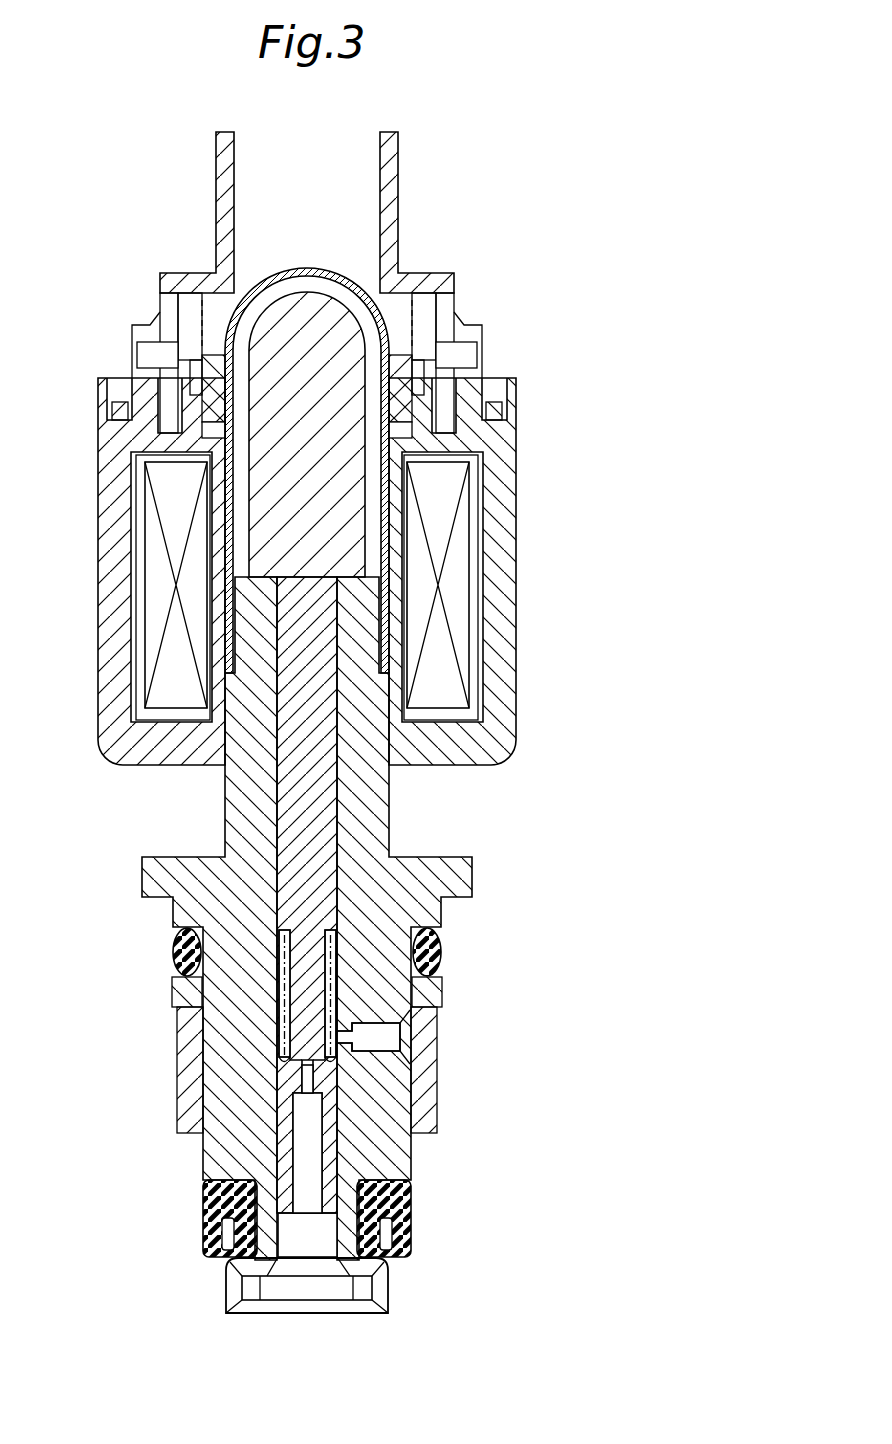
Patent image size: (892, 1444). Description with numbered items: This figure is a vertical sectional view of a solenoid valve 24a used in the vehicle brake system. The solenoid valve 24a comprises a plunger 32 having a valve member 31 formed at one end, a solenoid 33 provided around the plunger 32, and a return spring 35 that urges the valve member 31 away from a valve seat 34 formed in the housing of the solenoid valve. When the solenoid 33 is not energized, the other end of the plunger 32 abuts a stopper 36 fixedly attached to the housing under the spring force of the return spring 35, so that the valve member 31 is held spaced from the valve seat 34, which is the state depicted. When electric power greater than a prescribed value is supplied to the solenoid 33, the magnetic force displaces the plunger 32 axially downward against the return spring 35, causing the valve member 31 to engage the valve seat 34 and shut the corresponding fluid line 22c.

The solenoid valve 24a is at (529, 198).
The stopper 36 is at (356, 557).
The solenoid 33 is at (146, 593).
The plunger 32 is at (330, 816).
The return spring 35 is at (336, 946).
The valve seat 34 is at (290, 1062).
The valve member 31 is at (333, 1061).
The valve pin 22c is at (312, 1151).